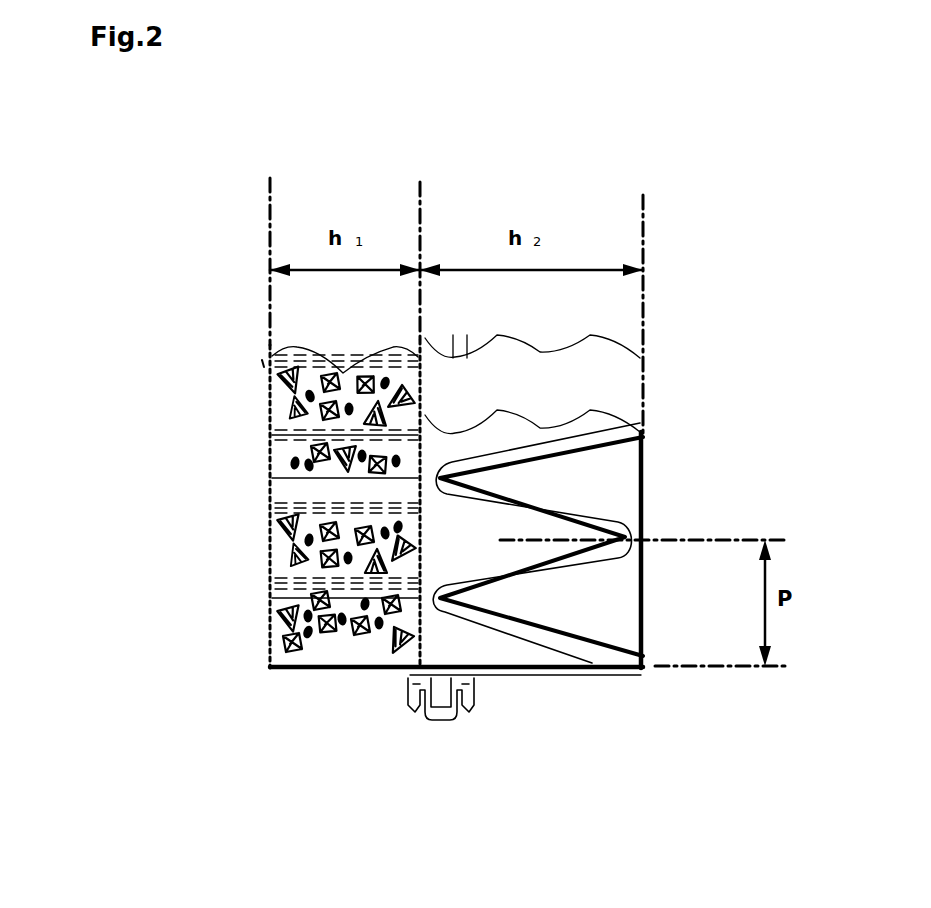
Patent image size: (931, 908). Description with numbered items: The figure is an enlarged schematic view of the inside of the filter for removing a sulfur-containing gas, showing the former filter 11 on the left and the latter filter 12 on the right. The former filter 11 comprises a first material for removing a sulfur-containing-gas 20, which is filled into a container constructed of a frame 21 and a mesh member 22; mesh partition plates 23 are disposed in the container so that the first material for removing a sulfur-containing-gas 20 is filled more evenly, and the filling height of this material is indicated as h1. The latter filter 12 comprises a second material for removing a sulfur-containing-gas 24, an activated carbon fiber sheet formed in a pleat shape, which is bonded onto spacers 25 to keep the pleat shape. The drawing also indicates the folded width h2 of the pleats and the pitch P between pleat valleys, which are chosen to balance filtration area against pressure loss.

The former filter 11 is at (135, 345).
The latter filter 12 is at (795, 300).
The first material for removing a sulfur-containing-gas 20 is at (292, 524).
The frame 21 is at (298, 666).
The mesh member 22 is at (272, 633).
The mesh partition plates 23 is at (293, 583).
The second material for removing a sulfur-containing-gas 24 is at (610, 525).
The spacers 25 is at (596, 480).